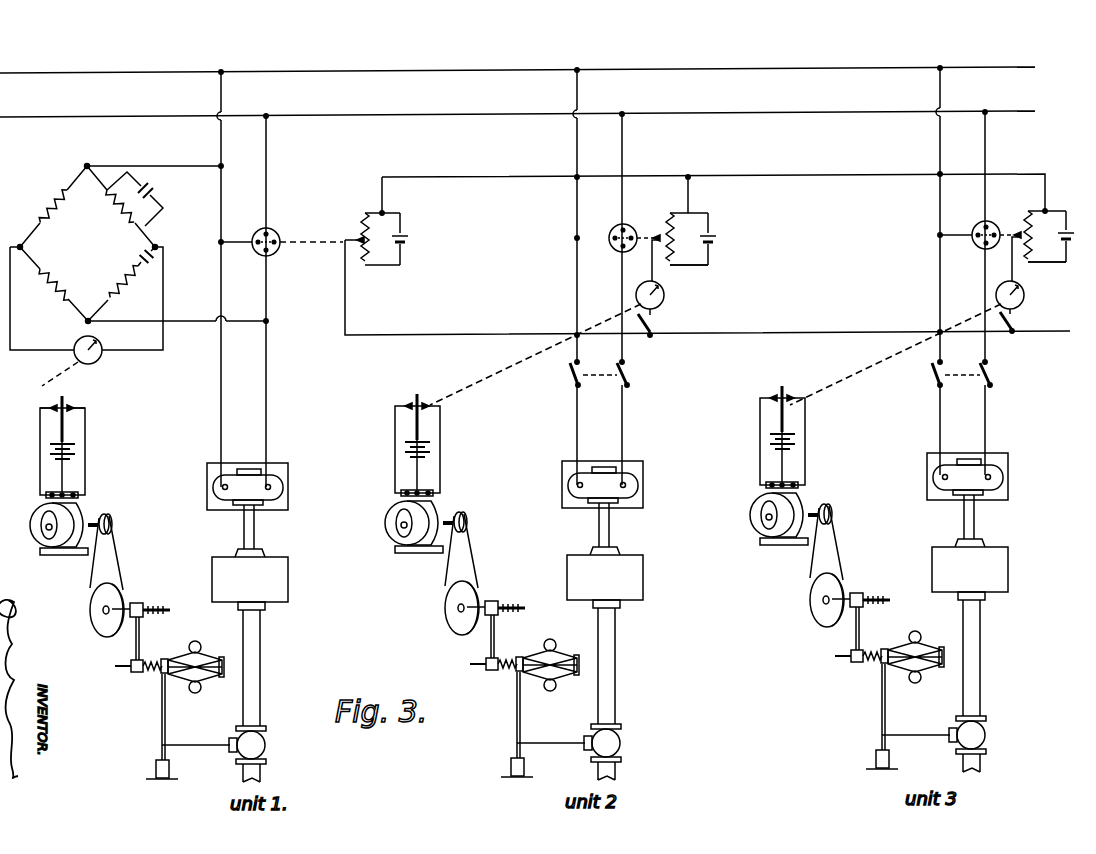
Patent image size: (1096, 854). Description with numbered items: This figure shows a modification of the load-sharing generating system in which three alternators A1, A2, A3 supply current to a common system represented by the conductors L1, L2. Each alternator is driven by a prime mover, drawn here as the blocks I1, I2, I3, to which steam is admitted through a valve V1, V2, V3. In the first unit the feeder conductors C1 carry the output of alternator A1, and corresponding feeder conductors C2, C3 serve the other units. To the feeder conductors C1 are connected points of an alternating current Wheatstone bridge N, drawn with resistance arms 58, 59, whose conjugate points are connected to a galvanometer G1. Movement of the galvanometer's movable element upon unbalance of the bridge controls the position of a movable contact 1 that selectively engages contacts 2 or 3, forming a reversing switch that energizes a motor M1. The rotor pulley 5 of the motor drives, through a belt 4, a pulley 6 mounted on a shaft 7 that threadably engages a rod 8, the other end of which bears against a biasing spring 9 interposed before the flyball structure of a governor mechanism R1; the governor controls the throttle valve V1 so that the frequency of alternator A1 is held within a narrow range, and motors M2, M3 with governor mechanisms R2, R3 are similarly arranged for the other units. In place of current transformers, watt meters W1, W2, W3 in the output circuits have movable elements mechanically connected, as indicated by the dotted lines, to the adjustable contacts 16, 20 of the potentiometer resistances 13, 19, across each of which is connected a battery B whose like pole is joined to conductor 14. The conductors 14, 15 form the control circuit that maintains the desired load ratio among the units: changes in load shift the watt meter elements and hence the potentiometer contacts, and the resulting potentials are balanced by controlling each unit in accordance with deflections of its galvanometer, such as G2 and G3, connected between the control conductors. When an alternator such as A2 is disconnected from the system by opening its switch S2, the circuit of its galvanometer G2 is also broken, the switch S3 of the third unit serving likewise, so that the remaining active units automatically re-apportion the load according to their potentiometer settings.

The conductor L1 is at (150, 70).
The conductor L2 is at (150, 116).
The feeder conductor C1 is at (232, 279).
The unit 2 circuit conductors C2 is at (585, 277).
The unit 3 circuit conductors C3 is at (942, 271).
The alternating current Wheatstone bridge N is at (80, 232).
The bridge resistance arm 58 is at (20, 245).
The bridge resistance arm 59 is at (30, 250).
The galvanometer G1 is at (138, 305).
The controlling galvanometer G2 is at (666, 300).
The galvanometer unit 3 G3 is at (926, 321).
The movable contact 1 is at (60, 400).
The contact 2 is at (48, 408).
The contact 3 is at (72, 410).
The watt meter W1 is at (278, 240).
The watt meter W2 is at (632, 226).
The watt meter W3 is at (990, 221).
The conductor 14 is at (491, 177).
The control circuit conductor 15 is at (467, 335).
The slidable contact 16 is at (356, 226).
The potentiometer resistance 13 is at (368, 264).
The battery B is at (410, 236).
The potentiometer resistance 19 is at (682, 264).
The slidable contact 20 is at (668, 236).
The switch S2 is at (654, 324).
The switch unit 3 S3 is at (960, 374).
The motor M1 is at (76, 515).
The motor unit 2 M2 is at (445, 534).
The motor unit 3 M3 is at (820, 524).
The belt 4 is at (122, 556).
The rotor pulley 5 is at (114, 523).
The pulley 6 is at (94, 614).
The shaft 7 is at (150, 608).
The rod 8 is at (140, 634).
The biasing spring 9 is at (150, 672).
The governor mechanism R1 is at (196, 641).
The regulator unit 2 R2 is at (551, 649).
The regulator unit 3 R3 is at (916, 641).
The alternator A1 is at (285, 478).
The alternator A2 is at (625, 466).
The alternator A3 is at (984, 460).
The induction apparatus unit 1 I1 is at (288, 580).
The induction apparatus unit 2 I2 is at (622, 613).
The induction apparatus unit 3 I3 is at (985, 605).
The throttle valve V1 is at (266, 750).
The valve V2 is at (585, 726).
The valve V3 is at (948, 718).